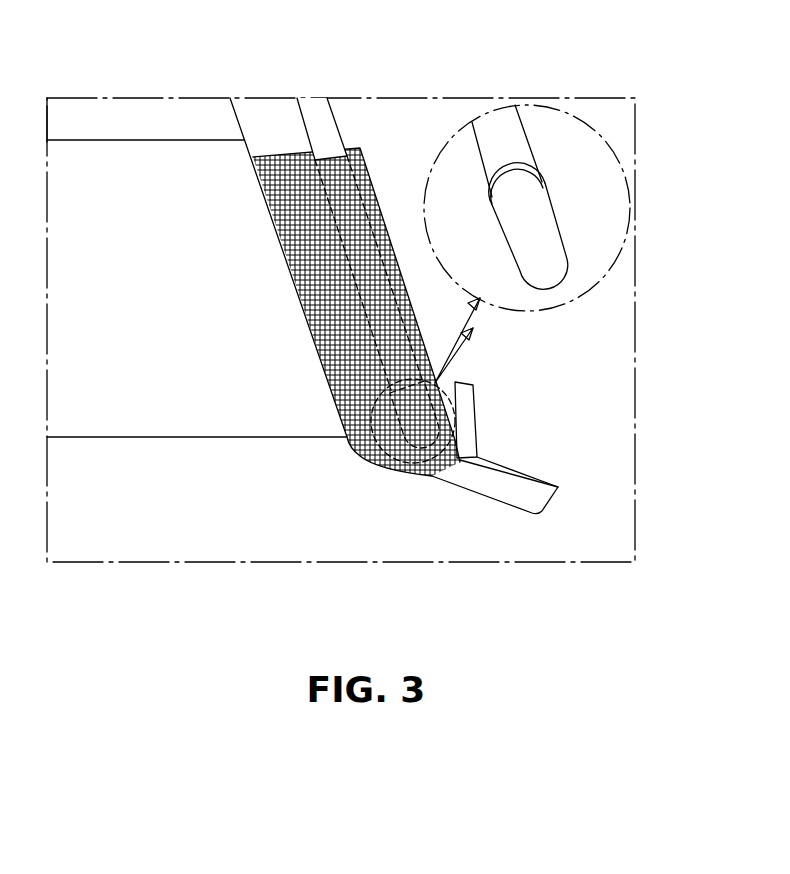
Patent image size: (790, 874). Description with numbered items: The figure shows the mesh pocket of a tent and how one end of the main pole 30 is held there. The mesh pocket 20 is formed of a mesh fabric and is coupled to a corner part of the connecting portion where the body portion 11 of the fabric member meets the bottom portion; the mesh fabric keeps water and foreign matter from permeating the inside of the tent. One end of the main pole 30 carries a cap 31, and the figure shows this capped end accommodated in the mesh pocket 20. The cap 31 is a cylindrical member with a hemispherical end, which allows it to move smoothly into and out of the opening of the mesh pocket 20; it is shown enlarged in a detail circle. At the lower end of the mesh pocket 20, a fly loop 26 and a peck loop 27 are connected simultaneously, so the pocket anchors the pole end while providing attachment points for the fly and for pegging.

The body portion 11 is at (210, 423).
The mesh pocket 20 is at (374, 212).
The main pole 30 is at (323, 127).
The cap 31 is at (553, 270).
The fly loop 26 is at (475, 422).
The peck loop 27 is at (498, 500).